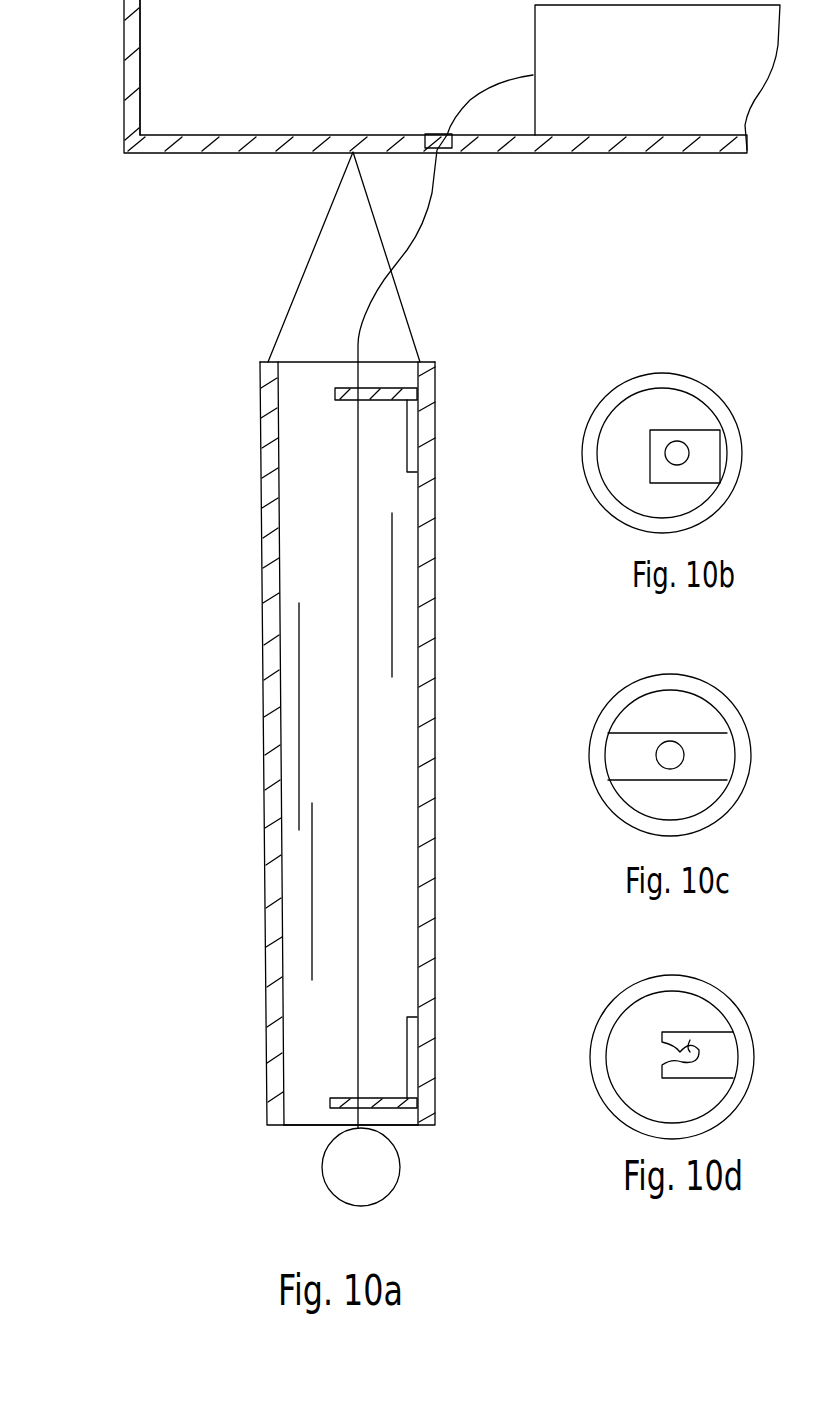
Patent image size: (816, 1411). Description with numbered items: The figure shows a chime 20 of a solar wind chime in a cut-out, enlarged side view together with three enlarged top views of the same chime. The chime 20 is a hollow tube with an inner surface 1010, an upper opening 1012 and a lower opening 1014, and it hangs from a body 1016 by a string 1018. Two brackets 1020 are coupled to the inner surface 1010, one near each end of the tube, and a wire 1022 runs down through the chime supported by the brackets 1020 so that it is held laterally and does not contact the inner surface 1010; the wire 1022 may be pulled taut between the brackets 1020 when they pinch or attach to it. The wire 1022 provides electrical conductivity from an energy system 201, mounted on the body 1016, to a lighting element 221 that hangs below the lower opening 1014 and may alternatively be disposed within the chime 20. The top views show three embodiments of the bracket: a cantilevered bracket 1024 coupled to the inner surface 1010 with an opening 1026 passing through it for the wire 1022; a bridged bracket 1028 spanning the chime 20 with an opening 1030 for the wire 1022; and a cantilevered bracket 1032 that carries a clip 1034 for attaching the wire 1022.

In FIG. 10A, the body 1016 is at (123, 77).
In FIG. 10A, the energy system 201 is at (533, 38).
In FIG. 10A, the string 1018 is at (306, 268).
In FIG. 10A, the opening 1012 is at (303, 353).
In FIG. 10A, the chime 20 is at (262, 993).
In FIG. 10B, the chime 20 is at (707, 385).
In FIG. 10C, the chime 20 is at (715, 690).
In FIG. 10D, the chime 20 is at (723, 992).
In FIG. 10A, the inner surface 1010 is at (422, 514).
In FIG. 10B, the inner surface 1010 is at (628, 394).
In FIG. 10C, the inner surface 1010 is at (628, 700).
In FIG. 10D, the inner surface 1010 is at (628, 1000).
In FIG. 10A, the brackets 1020 is at (347, 400).
In FIG. 10A, the wire 1022 is at (357, 517).
In FIG. 10A, the opening 1014 is at (303, 1130).
In FIG. 10A, the lighting element 221 is at (322, 1179).
In FIG. 10B, the cantilevered bracket 1024 is at (650, 462).
In FIG. 10B, the opening 1026 is at (677, 441).
In FIG. 10C, the bridged bracket 1028 is at (635, 782).
In FIG. 10C, the opening 1030 is at (668, 741).
In FIG. 10D, the cantilevered bracket 1032 is at (670, 1080).
In FIG. 10D, the clip 1034 is at (690, 1040).